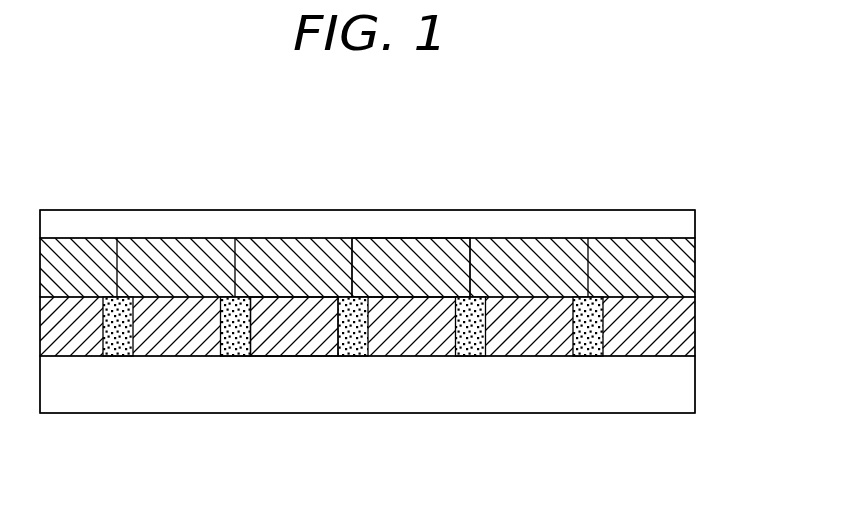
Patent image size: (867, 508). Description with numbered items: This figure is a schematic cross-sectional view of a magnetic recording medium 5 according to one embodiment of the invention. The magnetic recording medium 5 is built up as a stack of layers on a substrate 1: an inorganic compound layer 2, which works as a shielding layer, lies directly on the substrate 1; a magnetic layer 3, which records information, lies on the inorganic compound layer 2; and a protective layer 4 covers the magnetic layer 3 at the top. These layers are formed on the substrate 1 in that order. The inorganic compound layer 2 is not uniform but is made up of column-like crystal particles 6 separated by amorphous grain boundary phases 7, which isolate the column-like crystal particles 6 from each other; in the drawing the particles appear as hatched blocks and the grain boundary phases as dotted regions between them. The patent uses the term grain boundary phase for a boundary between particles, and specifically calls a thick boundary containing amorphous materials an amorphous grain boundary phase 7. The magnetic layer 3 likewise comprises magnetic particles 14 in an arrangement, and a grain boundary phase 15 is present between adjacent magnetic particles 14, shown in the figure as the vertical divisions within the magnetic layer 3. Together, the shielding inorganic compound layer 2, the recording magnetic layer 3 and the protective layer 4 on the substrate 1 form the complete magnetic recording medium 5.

The substrate 1 is at (695, 383).
The inorganic compound layer 2 is at (378, 384).
The magnetic layer 3 is at (378, 221).
The protective layer 4 is at (695, 222).
The magnetic recording medium 5 is at (593, 413).
The column-like crystal particles 6 is at (300, 357).
The amorphous grain boundary phases 7 is at (230, 357).
The magnetic particles 14 is at (413, 238).
The grain boundary phase 15 is at (355, 238).